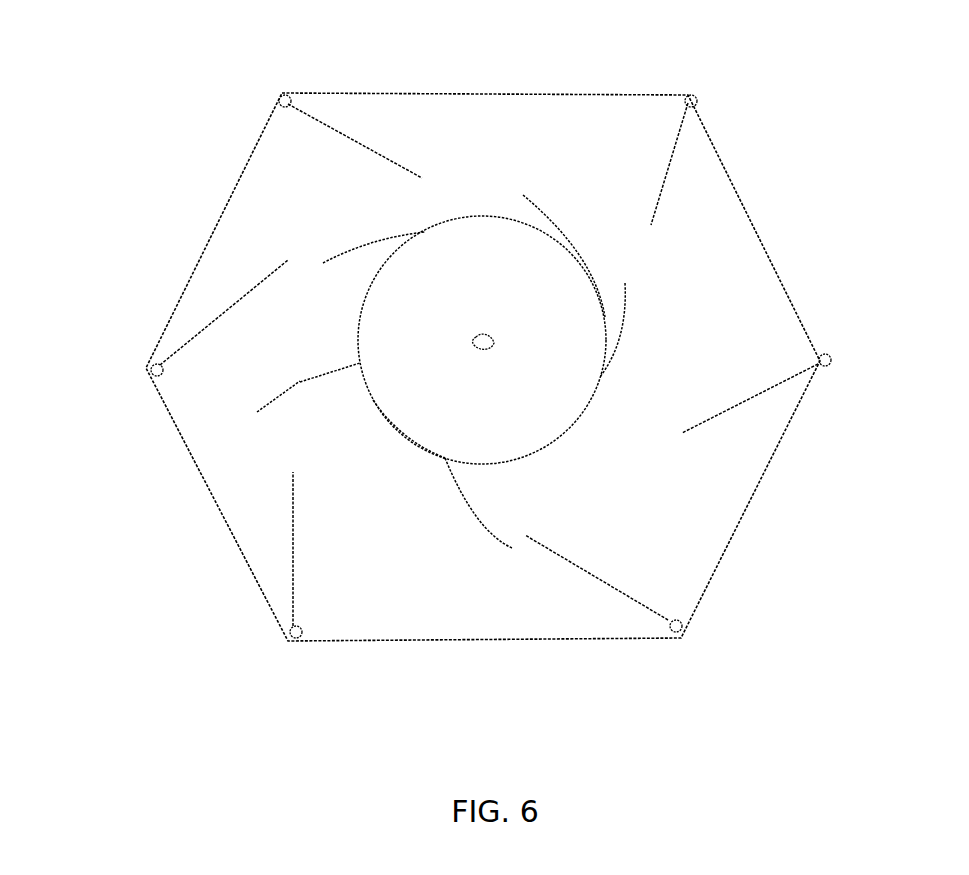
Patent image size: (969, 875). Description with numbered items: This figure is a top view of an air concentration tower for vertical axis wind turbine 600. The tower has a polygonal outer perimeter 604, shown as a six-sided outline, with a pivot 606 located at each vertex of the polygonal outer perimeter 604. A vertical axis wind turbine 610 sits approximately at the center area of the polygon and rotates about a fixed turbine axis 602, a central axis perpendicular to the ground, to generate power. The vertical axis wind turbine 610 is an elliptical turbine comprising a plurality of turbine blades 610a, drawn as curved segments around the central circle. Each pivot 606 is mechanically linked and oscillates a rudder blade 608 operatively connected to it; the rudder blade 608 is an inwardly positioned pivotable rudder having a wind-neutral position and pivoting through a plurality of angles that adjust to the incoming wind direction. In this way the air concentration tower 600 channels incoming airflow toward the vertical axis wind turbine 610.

The air concentration tower for vertical axis wind turbine 600 is at (135, 79).
The fixed turbine axis 602 is at (488, 343).
The polygonal outer perimeter 604 is at (740, 205).
The pivot 606 is at (698, 98).
The rudder blade 608 is at (293, 560).
The vertical axis wind turbine 610 is at (370, 400).
The turbine blades 610a is at (302, 382).